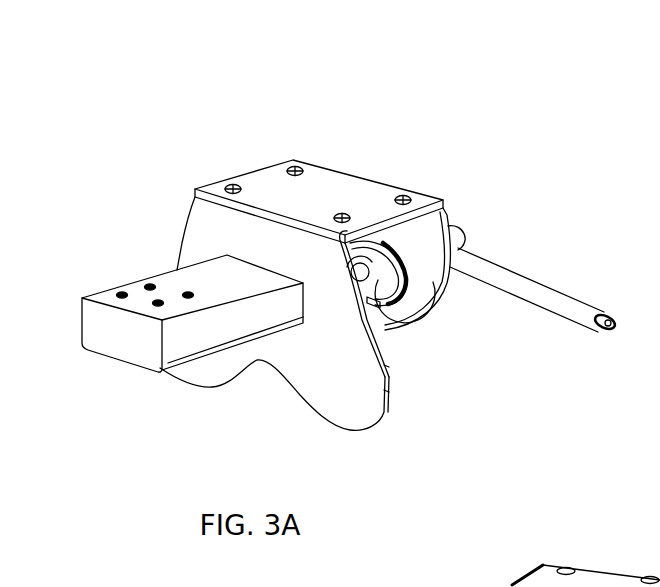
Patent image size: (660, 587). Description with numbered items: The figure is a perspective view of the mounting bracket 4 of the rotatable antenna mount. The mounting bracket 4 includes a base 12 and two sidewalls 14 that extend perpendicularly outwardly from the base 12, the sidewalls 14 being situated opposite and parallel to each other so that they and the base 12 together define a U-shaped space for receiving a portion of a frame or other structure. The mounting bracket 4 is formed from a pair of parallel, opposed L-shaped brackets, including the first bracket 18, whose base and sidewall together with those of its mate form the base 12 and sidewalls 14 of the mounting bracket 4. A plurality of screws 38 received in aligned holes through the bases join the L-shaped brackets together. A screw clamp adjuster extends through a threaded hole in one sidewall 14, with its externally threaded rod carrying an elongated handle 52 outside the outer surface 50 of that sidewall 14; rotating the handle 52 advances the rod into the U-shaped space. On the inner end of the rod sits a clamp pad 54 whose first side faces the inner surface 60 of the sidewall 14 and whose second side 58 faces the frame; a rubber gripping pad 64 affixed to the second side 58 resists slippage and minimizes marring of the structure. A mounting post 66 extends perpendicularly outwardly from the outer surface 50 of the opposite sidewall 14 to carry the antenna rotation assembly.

The mounting bracket 4 is at (147, 142).
The base 12 is at (336, 146).
The sidewalls 14 is at (407, 240).
The first bracket 18 is at (347, 408).
The screws 38 is at (292, 166).
The outer surface 50 is at (190, 373).
The handle 52 is at (508, 268).
The clamp pad 54 is at (400, 308).
The second side 58 is at (376, 300).
The inner surface 60 is at (432, 235).
The gripping pad 64 is at (393, 283).
The mounting post 66 is at (177, 347).